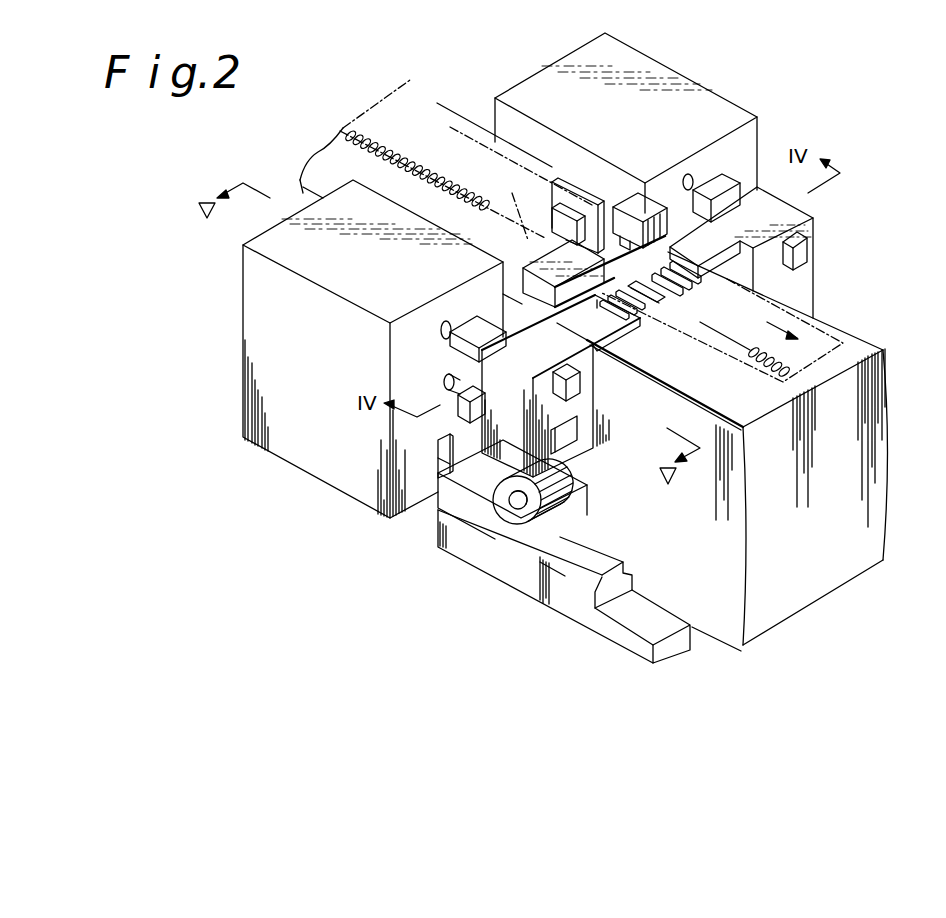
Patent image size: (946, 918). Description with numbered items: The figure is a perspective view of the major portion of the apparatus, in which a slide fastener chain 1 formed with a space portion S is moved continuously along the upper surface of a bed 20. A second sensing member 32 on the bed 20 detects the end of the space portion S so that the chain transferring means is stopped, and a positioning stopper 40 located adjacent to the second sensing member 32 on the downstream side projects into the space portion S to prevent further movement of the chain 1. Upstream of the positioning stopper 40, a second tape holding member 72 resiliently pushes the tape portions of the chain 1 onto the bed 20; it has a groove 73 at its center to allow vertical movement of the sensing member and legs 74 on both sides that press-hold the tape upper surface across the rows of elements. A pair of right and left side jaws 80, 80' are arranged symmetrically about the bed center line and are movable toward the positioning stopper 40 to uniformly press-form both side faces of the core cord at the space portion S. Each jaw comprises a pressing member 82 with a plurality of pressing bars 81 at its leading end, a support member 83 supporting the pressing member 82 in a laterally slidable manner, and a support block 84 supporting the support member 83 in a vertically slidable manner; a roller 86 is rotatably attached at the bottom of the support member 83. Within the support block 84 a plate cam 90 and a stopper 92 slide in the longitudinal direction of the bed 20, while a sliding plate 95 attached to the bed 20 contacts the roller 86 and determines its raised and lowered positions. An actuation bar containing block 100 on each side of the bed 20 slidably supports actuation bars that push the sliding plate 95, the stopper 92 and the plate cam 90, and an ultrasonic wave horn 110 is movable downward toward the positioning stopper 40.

The slide fastener chain 1 is at (408, 96).
The space portion S is at (515, 206).
The bed 20 is at (848, 415).
The second sensing member 32 is at (578, 190).
The positioning stopper 40 is at (665, 300).
The second tape holding member 72 is at (542, 262).
The groove 73 is at (580, 232).
The legs 74 is at (545, 297).
The side jaw 80 is at (624, 355).
The side jaw 80' is at (763, 246).
The pressing bars 81 is at (637, 318).
The pressing member 82 is at (600, 318).
The support member 83 is at (572, 482).
The support block 84 is at (505, 448).
The roller 86 is at (525, 518).
The plate cam 90 is at (575, 390).
The stopper 92 is at (572, 437).
The sliding plate 95 is at (598, 562).
The actuation bar containing block 100 is at (312, 457).
The ultrasonic wave horn 110 is at (688, 150).